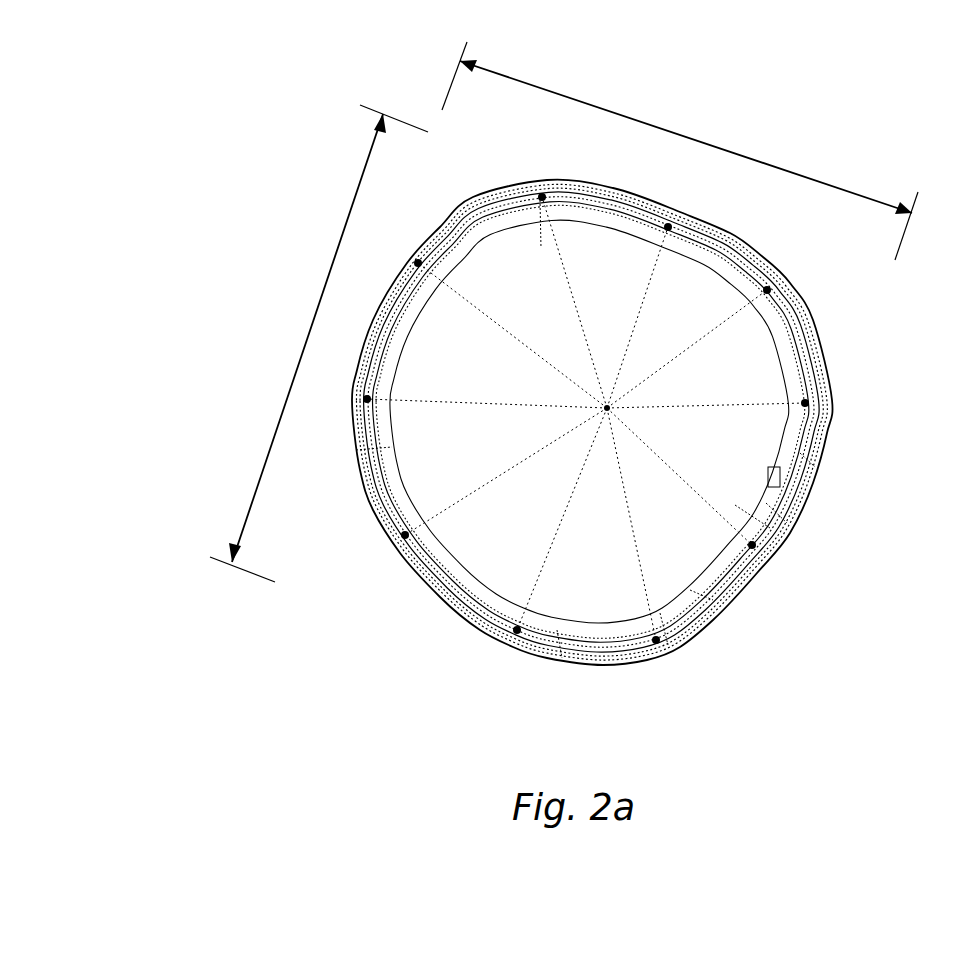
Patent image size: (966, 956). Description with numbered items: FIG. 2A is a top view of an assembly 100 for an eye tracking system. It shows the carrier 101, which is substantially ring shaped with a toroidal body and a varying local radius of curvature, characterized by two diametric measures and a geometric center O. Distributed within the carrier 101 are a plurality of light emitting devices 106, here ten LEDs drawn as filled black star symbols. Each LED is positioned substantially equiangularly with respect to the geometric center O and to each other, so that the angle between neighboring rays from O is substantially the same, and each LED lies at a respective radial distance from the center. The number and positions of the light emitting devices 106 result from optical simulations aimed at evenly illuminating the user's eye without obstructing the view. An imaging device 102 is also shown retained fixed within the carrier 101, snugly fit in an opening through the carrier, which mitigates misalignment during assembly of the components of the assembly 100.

The assembly 100 is at (534, 378).
The carrier 101 is at (703, 632).
The imaging device 102 is at (778, 480).
The light emitting devices 106 is at (808, 405).